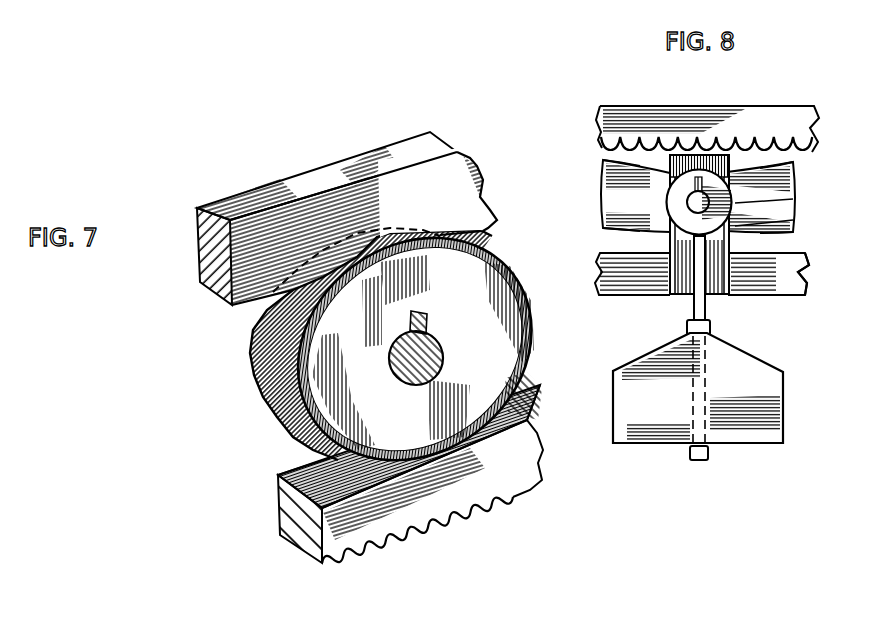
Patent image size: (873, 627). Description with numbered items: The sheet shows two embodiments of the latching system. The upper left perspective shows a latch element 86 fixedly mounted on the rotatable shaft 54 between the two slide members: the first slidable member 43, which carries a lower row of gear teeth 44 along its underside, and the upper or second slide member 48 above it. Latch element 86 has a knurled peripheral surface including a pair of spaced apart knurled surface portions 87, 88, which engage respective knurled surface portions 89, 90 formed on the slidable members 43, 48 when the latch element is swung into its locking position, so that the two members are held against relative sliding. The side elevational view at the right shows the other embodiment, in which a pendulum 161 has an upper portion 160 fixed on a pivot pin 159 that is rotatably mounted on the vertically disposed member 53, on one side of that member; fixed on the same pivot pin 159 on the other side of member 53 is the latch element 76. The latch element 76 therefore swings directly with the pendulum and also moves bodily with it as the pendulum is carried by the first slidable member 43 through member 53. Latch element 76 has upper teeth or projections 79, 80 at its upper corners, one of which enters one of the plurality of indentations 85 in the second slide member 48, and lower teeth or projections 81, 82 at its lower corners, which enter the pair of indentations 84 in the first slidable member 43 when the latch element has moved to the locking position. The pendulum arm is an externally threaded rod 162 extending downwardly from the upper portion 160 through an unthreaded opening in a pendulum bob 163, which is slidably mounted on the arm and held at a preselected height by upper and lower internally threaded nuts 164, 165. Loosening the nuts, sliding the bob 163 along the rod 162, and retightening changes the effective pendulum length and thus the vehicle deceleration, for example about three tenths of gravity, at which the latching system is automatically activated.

In FIG. 7, the first slidable member 43 is at (477, 465).
In FIG. 8, the first slidable member 43 is at (804, 268).
In FIG. 7, the lower row of gear teeth 44 is at (508, 490).
In FIG. 7, the second slide member 48 is at (439, 202).
In FIG. 8, the second slide member 48 is at (694, 106).
In FIG. 8, the vertically disposed member 53 is at (672, 268).
In FIG. 7, the rotatable shaft 54 is at (443, 360).
In FIG. 8, the latch element 76 is at (641, 206).
In FIG. 8, the upper tooth 79 is at (603, 160).
In FIG. 8, the upper tooth 80 is at (793, 163).
In FIG. 8, the lower tooth 81 is at (603, 228).
In FIG. 8, the lower tooth 82 is at (791, 235).
In FIG. 8, the indentation 84 is at (620, 253).
In FIG. 8, the indentation 85 is at (757, 138).
In FIG. 7, the latch element 86 is at (346, 358).
In FIG. 7, the knurled surface portion 87 is at (543, 388).
In FIG. 7, the knurled surface portion 88 is at (258, 328).
In FIG. 7, the knurled surface portion 89 is at (292, 465).
In FIG. 7, the knurled surface portion 90 is at (476, 231).
In FIG. 8, the pivot pin 159 is at (793, 220).
In FIG. 8, the pendulum upper portion 160 is at (793, 199).
In FIG. 8, the pendulum 161 is at (676, 321).
In FIG. 8, the externally threaded rod 162 is at (690, 302).
In FIG. 8, the pendulum bob 163 is at (629, 425).
In FIG. 8, the upper nut 164 is at (710, 327).
In FIG. 8, the lower nut 165 is at (710, 453).